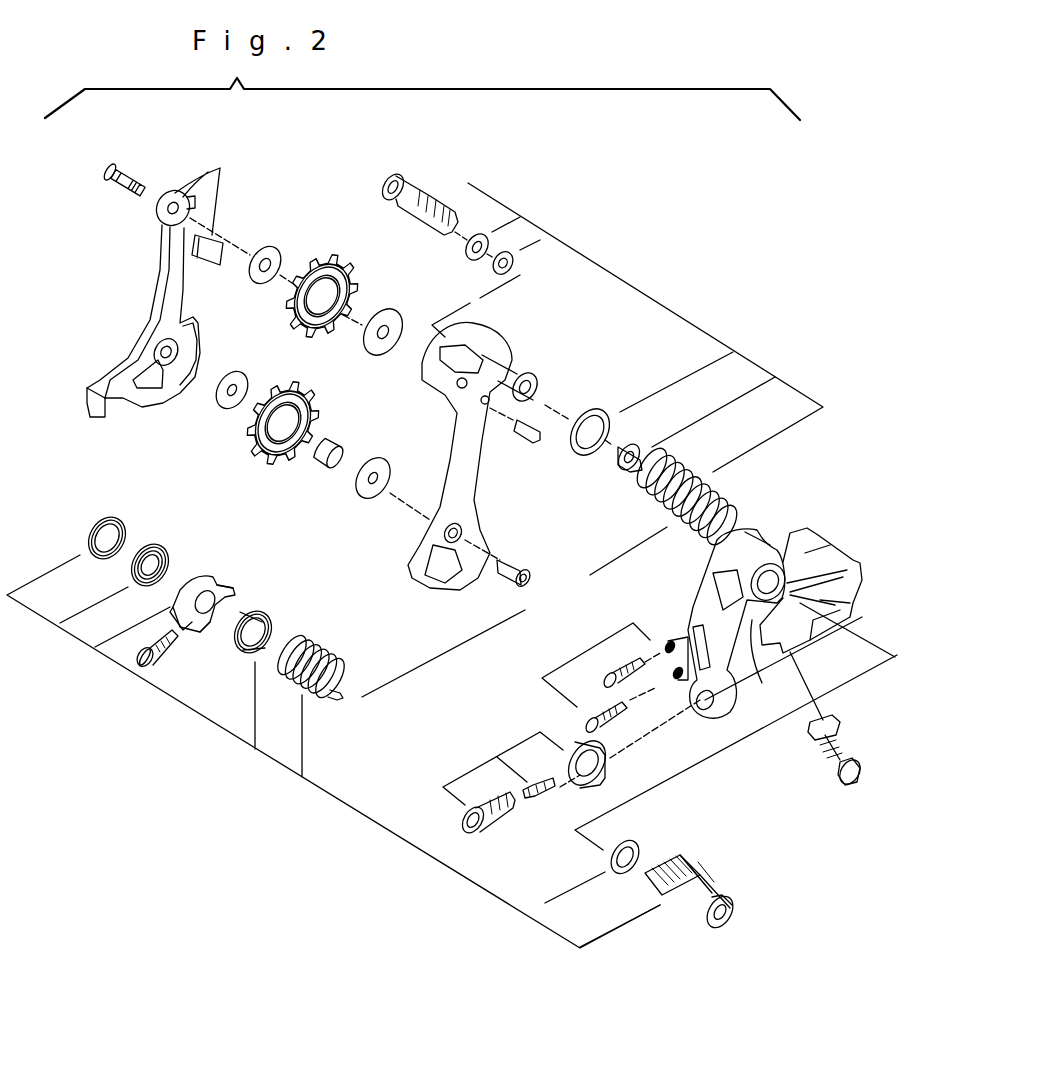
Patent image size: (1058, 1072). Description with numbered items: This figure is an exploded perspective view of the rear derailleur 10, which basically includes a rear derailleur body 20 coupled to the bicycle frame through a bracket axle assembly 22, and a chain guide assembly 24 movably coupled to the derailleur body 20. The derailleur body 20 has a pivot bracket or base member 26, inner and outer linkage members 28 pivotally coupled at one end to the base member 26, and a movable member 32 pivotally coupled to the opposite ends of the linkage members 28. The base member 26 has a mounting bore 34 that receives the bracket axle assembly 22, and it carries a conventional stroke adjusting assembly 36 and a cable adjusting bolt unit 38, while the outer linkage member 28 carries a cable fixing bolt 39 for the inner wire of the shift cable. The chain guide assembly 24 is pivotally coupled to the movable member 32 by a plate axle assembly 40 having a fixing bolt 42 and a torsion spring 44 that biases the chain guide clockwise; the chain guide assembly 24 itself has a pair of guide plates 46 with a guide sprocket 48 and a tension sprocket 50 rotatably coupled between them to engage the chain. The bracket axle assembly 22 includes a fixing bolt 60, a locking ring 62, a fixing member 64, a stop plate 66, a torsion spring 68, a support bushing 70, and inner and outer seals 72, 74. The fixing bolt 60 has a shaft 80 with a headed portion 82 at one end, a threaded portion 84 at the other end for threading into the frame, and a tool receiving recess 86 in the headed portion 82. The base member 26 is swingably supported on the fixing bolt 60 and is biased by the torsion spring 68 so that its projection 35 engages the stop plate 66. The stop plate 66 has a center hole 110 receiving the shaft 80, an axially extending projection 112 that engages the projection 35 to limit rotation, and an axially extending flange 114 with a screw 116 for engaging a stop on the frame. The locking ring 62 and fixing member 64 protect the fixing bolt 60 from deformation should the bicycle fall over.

The rear derailleur 10 is at (730, 253).
The rear derailleur body 20 is at (693, 585).
The bracket axle assembly 22 is at (318, 790).
The chain guide assembly 24 is at (250, 228).
The base member 26 is at (756, 650).
The linkage members 28 is at (823, 620).
The movable member 32 is at (802, 530).
The mounting bore 34 is at (747, 627).
The projection 35 is at (757, 527).
The stroke adjusting assembly 36 is at (607, 662).
The cable adjusting bolt unit 38 is at (497, 753).
The cable fixing bolt 39 is at (695, 871).
The plate axle assembly 40 is at (645, 292).
The fixing bolt 42 is at (412, 183).
The torsion spring 44 is at (652, 500).
The guide plates 46 is at (158, 295).
The guide sprocket 48 is at (330, 253).
The tension sprocket 50 is at (250, 443).
The fixing bolt 60 is at (736, 809).
The locking ring 62 is at (167, 548).
The fixing member 64 is at (102, 515).
The stop plate 66 is at (260, 638).
The torsion spring 68 is at (333, 650).
The support bushing 70 is at (277, 625).
The inner seal 72 is at (253, 597).
The outer seal 74 is at (632, 833).
The shaft 80 is at (697, 880).
The headed portion 82 is at (735, 905).
The threaded portion 84 is at (665, 868).
The tool receiving recess 86 is at (727, 928).
The center hole 110 is at (203, 570).
The projection 112 is at (240, 587).
The flange 114 is at (200, 632).
The screw 116 is at (143, 663).